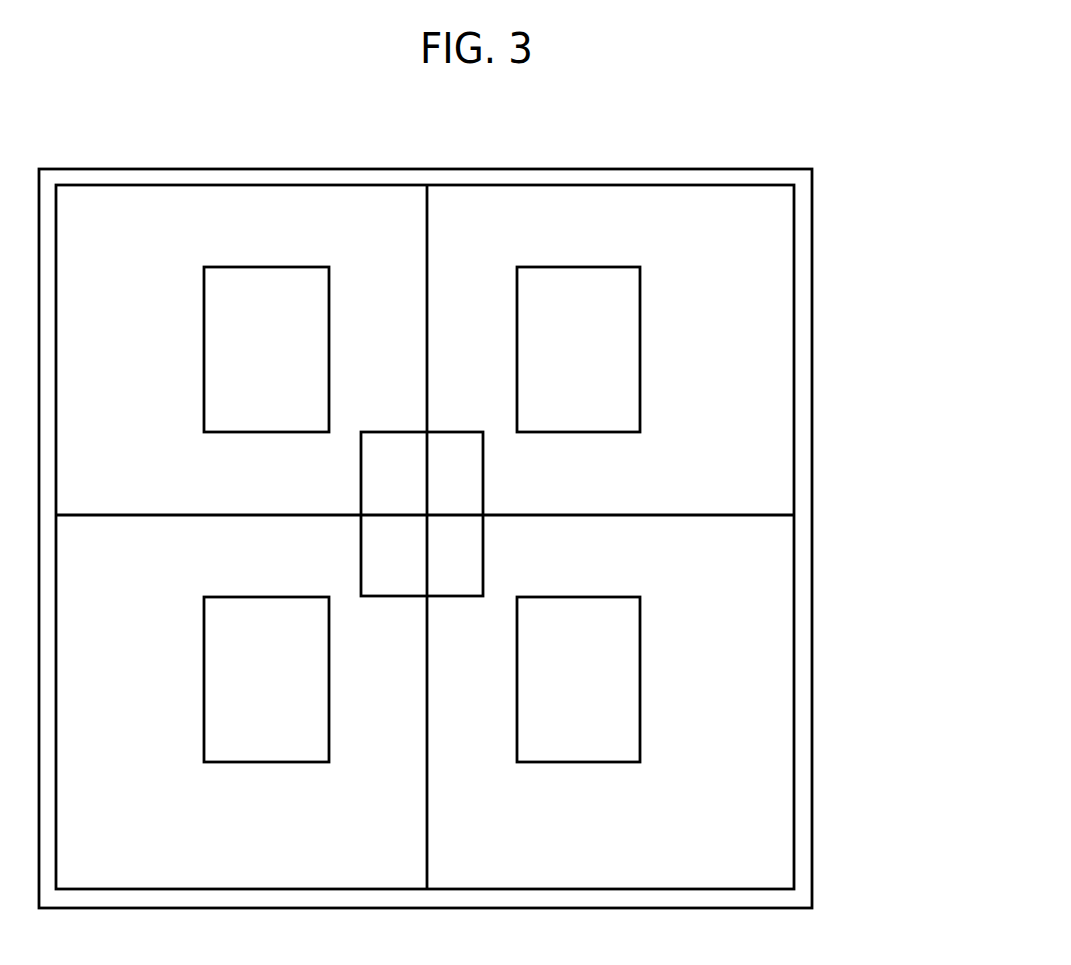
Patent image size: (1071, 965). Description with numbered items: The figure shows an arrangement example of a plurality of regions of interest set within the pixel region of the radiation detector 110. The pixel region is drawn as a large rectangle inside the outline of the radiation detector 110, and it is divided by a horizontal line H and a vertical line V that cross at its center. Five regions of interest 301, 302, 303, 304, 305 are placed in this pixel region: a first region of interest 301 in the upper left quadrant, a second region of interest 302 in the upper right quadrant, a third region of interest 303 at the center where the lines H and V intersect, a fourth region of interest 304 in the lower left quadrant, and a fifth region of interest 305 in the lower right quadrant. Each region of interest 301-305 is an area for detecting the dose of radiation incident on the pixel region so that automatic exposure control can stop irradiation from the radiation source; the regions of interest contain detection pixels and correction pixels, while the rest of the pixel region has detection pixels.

The radiation detector 110 is at (797, 337).
The horizontal center line H is at (133, 515).
The vertical center line V is at (427, 788).
The region of interest 301 is at (235, 432).
The region of interest 302 is at (605, 432).
The region of interest 303 is at (400, 596).
The region of interest 304 is at (235, 762).
The region of interest 305 is at (605, 762).